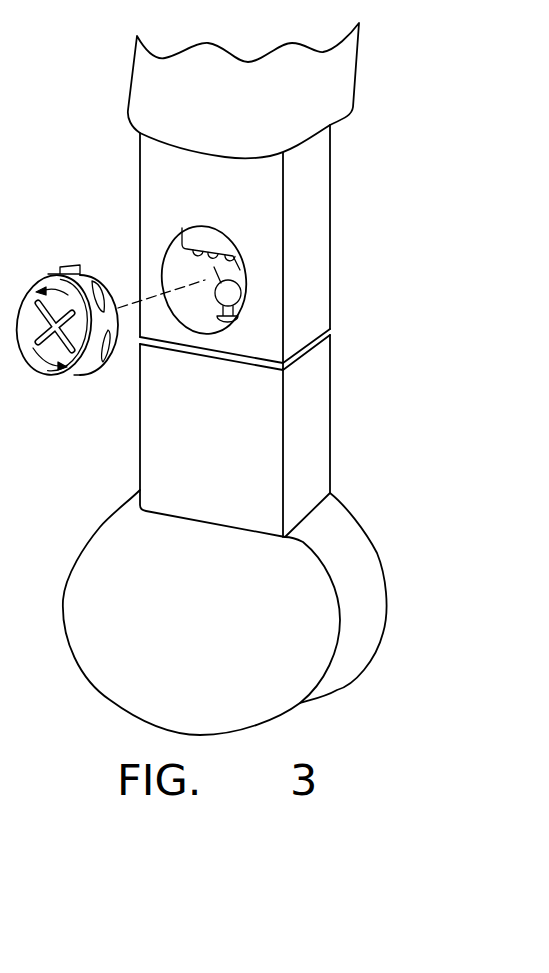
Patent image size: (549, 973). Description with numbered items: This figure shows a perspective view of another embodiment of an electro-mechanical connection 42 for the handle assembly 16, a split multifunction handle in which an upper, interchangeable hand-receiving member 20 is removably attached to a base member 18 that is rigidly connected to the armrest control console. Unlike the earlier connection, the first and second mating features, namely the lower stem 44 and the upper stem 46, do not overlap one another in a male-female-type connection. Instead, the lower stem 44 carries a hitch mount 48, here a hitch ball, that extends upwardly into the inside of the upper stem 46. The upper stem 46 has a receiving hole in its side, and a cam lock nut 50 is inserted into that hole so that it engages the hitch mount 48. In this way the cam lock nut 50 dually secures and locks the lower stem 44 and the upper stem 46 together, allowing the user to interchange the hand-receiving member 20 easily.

The handle assembly 16 is at (354, 166).
The base member 18 is at (347, 525).
The hand-receiving member 20 is at (145, 102).
The electro-mechanical connection 42 is at (354, 271).
The lower stem 44 is at (313, 429).
The upper stem 46 is at (315, 233).
The hitch mount 48 is at (230, 293).
The cam lock nut 50 is at (50, 372).